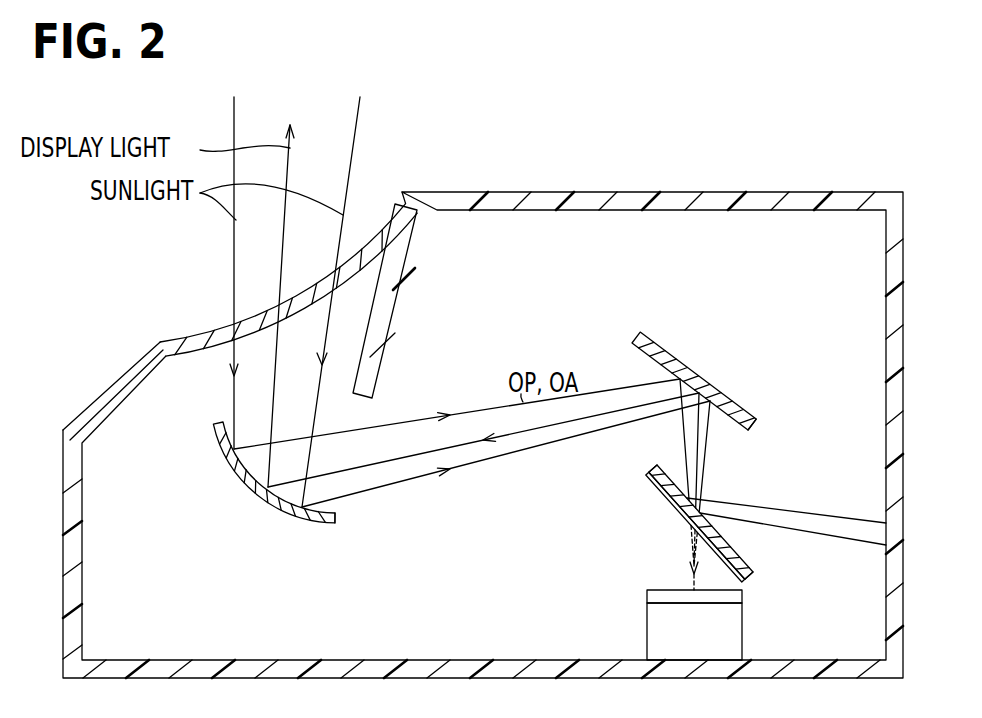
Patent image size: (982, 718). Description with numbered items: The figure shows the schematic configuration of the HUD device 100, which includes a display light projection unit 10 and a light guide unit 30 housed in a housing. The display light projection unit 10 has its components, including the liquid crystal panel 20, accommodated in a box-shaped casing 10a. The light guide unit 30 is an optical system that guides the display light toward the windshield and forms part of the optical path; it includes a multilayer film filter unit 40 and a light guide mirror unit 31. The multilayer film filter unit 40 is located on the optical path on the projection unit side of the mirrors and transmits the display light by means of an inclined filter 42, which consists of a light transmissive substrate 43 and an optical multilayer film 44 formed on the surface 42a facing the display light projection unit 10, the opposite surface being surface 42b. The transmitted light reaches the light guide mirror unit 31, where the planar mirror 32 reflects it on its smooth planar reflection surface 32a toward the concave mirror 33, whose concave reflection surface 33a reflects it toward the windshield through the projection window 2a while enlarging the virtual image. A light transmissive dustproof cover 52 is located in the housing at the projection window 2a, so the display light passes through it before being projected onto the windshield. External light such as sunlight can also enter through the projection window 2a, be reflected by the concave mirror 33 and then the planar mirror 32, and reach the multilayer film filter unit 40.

The HUD device 100 is at (108, 342).
The display light projection unit 10 is at (743, 632).
The casing 10a is at (694, 631).
The liquid crystal panel 20 is at (743, 597).
The projection window 2a is at (394, 203).
The dustproof cover 52 is at (172, 337).
The light guide unit 30 is at (477, 446).
The light guide mirror unit 31 is at (447, 409).
The planar mirror 32 is at (633, 334).
The reflection surface 32a is at (731, 424).
The concave mirror 33 is at (224, 460).
The reflection surface 33a is at (335, 512).
The multilayer film filter unit 40 is at (663, 542).
The inclined filter 42 is at (594, 473).
The surface 42a is at (657, 537).
The surface 42b is at (747, 555).
The light transmissive substrate 43 is at (655, 467).
The optical multilayer film 44 is at (645, 478).